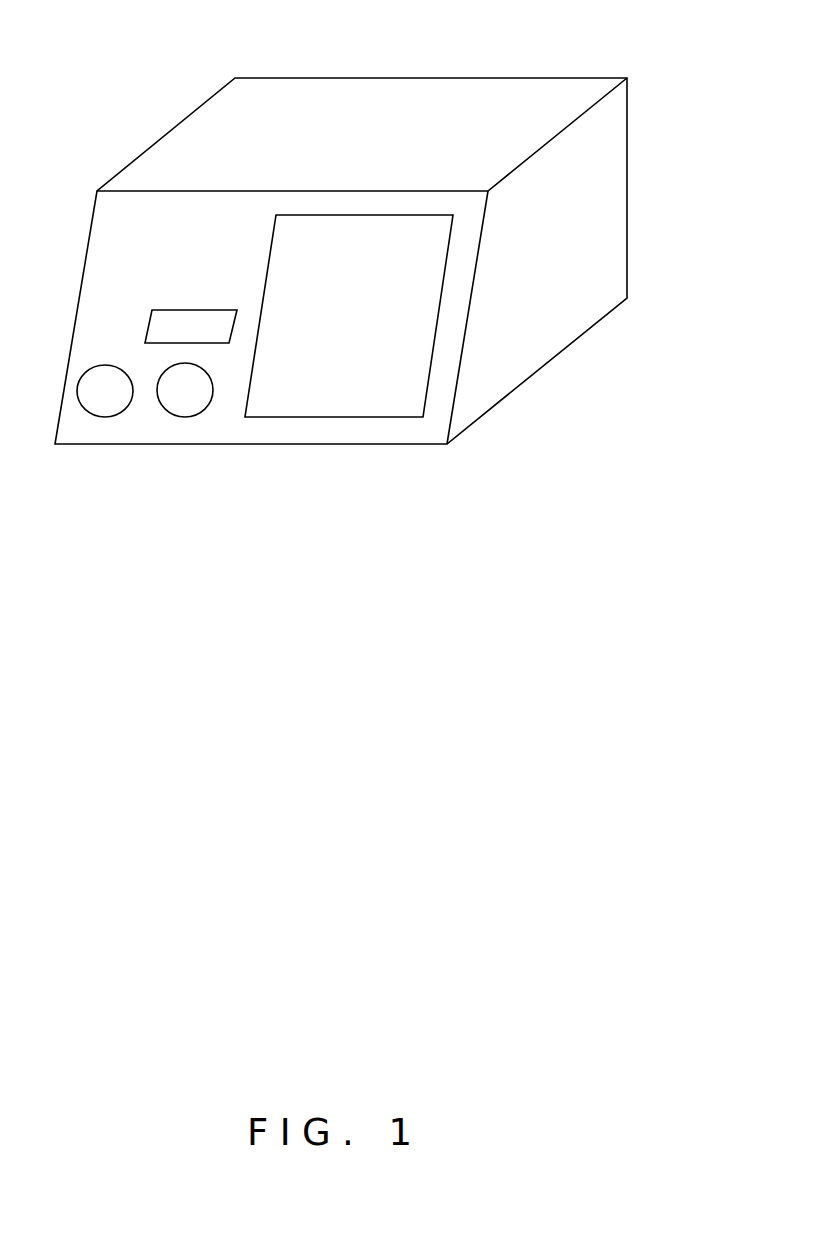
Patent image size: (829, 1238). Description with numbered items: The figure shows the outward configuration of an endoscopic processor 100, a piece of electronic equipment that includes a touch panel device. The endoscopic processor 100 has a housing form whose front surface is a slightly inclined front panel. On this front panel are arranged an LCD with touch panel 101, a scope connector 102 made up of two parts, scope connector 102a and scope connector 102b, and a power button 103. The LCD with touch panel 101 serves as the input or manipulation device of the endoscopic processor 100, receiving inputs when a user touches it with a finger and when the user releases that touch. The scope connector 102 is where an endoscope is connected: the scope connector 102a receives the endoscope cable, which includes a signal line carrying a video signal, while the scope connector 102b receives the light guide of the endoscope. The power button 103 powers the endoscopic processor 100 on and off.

The endoscopic processor 100 is at (413, 78).
The LCD with touch panel 101 is at (353, 417).
The scope connector 102 is at (240, 540).
The scope connector 102a is at (155, 343).
The scope connector 102b is at (188, 417).
The power button 103 is at (102, 417).